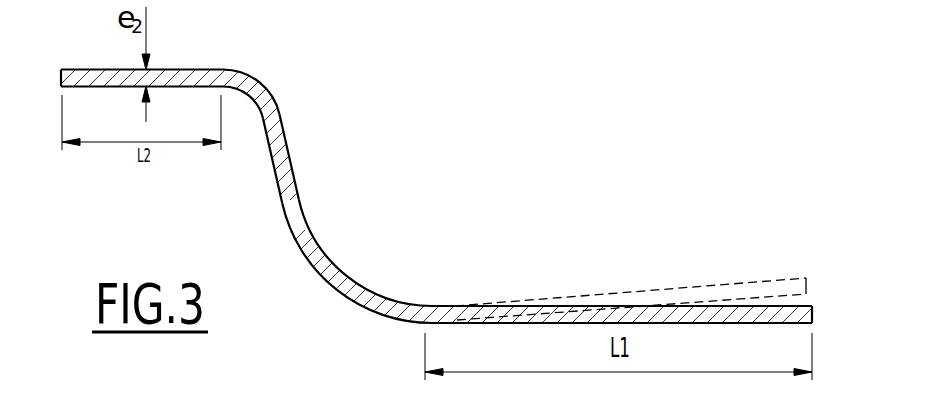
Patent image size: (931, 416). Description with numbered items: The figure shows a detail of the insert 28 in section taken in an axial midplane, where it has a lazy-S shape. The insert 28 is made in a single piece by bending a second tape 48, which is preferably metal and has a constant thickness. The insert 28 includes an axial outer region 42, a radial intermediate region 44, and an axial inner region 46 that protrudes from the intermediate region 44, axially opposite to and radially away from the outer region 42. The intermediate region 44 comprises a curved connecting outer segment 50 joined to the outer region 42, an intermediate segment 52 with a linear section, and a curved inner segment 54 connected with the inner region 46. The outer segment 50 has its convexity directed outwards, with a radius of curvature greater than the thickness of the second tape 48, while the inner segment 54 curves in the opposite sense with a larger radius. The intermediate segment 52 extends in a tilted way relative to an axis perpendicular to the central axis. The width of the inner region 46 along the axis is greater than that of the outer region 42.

The insert 28 is at (465, 208).
The axial outer region 42 is at (175, 78).
The radial intermediate region 44 is at (309, 174).
The axial inner region 46 is at (668, 309).
The second tape 48 is at (813, 312).
The curved connecting outer segment 50 is at (258, 81).
The intermediate segment 52 is at (270, 162).
The curved inner segment 54 is at (350, 303).